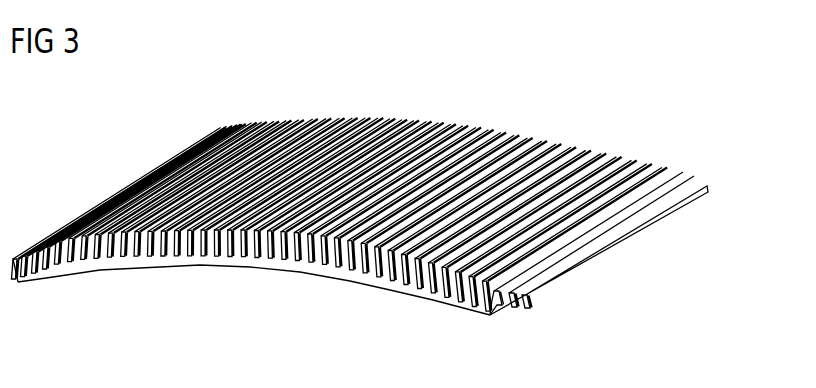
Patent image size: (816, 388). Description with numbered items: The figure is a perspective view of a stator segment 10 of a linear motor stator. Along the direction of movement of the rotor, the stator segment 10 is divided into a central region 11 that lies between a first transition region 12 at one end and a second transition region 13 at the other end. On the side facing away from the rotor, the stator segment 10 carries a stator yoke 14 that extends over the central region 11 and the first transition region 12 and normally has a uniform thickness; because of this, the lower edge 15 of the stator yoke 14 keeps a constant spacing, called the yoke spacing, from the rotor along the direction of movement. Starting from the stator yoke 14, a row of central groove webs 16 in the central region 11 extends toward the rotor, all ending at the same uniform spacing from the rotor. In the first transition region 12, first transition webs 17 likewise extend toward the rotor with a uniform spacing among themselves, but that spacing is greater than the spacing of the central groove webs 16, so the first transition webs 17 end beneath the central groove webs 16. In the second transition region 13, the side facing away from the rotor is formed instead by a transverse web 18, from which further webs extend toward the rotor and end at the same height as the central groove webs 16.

The stator segment 10 is at (570, 99).
The central region 11 is at (430, 104).
The first transition region 12 is at (33, 232).
The second transition region 13 is at (689, 155).
The stator yoke 14 is at (202, 264).
The lower edge 15 is at (277, 274).
The central groove webs 16 is at (466, 126).
The first transition webs 17 is at (42, 263).
The transverse web 18 is at (515, 310).